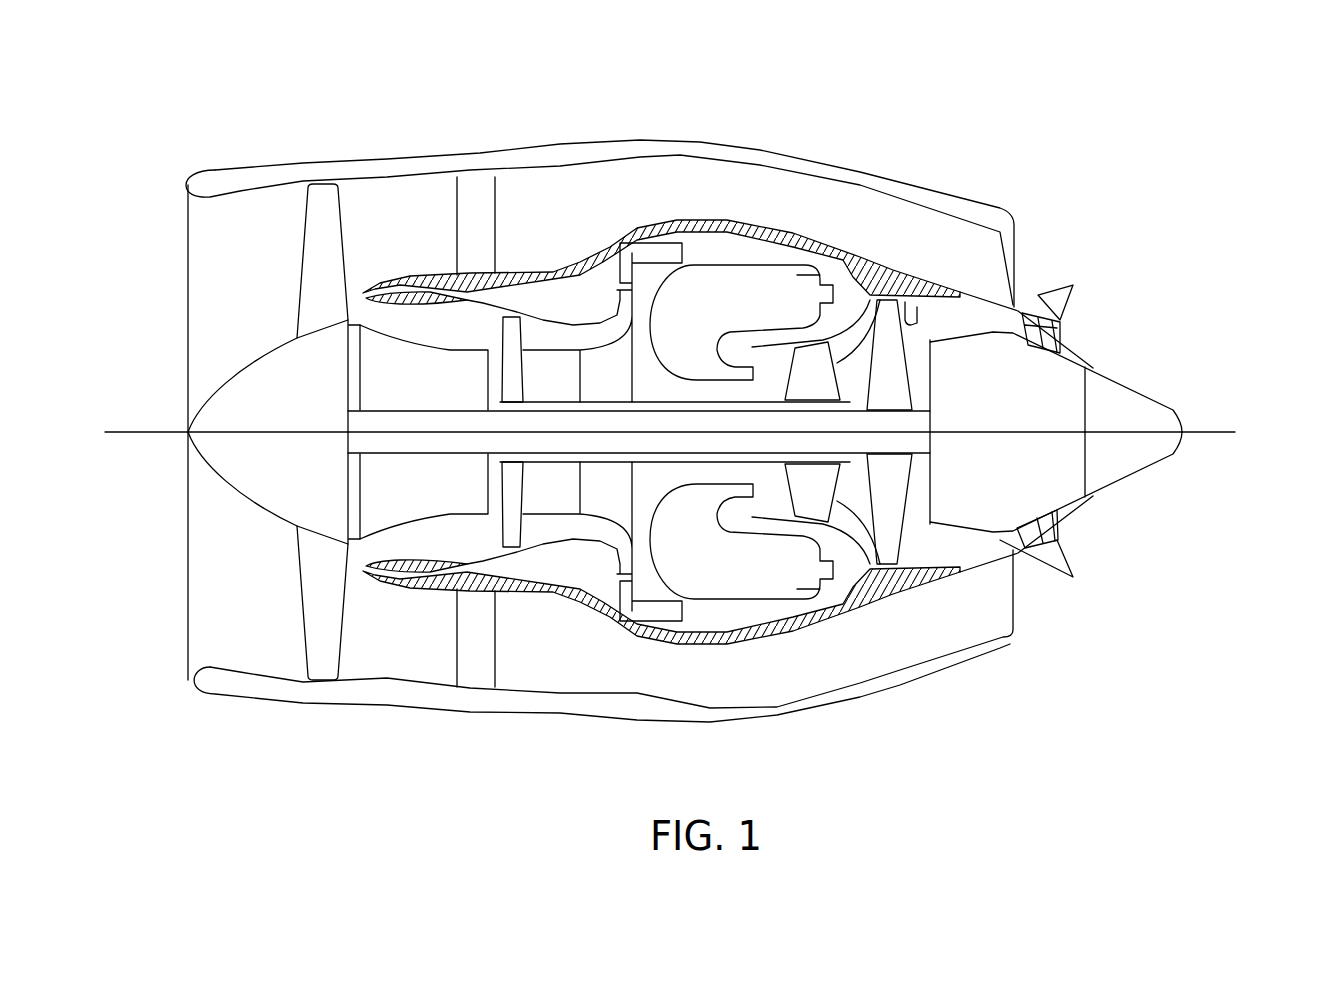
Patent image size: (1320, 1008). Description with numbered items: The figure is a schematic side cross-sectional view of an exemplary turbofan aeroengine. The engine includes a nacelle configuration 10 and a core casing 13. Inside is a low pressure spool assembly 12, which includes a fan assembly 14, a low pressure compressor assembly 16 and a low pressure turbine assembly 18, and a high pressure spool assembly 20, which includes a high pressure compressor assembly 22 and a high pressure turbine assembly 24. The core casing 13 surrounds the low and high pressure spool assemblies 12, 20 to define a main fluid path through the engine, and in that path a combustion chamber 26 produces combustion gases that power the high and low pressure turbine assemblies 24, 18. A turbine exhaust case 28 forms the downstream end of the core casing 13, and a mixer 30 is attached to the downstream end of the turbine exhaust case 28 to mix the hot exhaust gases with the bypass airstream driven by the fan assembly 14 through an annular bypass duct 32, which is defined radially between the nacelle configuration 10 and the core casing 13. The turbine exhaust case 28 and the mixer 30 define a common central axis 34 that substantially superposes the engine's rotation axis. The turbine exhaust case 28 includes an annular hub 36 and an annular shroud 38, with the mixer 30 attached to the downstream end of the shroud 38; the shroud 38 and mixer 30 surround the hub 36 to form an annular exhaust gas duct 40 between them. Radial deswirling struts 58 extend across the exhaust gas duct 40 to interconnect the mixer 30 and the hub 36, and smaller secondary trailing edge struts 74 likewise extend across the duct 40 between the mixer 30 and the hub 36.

The nacelle configuration 10 is at (637, 165).
The low pressure spool assembly 12 is at (433, 410).
The core casing 13 is at (657, 218).
The fan assembly 14 is at (302, 243).
The low pressure compressor assembly 16 is at (380, 367).
The low pressure turbine assembly 18 is at (910, 300).
The high pressure spool assembly 20 is at (522, 333).
The high pressure compressor assembly 22 is at (562, 402).
The high pressure turbine assembly 24 is at (843, 293).
The combustion chamber 26 is at (756, 317).
The turbine exhaust case 28 is at (987, 292).
The mixer 30 is at (1045, 305).
The annular bypass duct 32 is at (620, 677).
The common central axis 34 is at (1217, 432).
The annular hub 36 is at (930, 567).
The annular shroud 38 is at (990, 563).
The annular exhaust gas duct 40 is at (1015, 553).
The radial deswirling struts 58 is at (1013, 333).
The secondary trailing edge struts 74 is at (1060, 527).